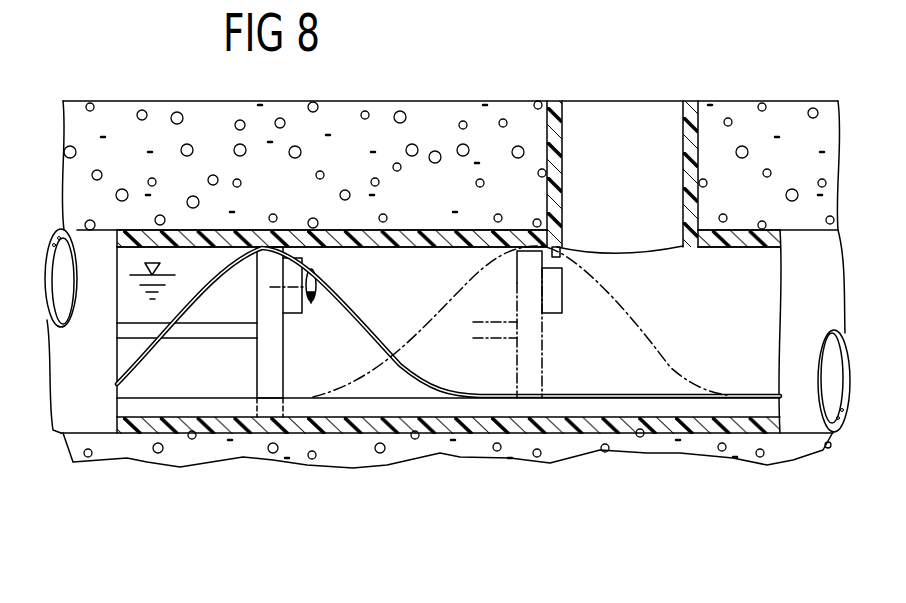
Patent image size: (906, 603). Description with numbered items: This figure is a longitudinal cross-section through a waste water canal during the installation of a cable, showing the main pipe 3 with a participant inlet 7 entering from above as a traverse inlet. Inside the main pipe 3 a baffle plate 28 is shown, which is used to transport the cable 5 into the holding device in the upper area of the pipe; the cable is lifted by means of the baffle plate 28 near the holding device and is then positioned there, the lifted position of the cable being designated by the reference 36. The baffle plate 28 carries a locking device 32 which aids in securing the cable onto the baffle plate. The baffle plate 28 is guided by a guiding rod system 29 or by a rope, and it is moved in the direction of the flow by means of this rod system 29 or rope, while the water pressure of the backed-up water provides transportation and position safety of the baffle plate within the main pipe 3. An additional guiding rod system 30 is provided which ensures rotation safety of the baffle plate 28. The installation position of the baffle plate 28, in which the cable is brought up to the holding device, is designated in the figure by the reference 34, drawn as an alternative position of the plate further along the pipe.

The main pipe 3 is at (427, 270).
The cable 5 is at (130, 370).
The participant inlet 7 is at (621, 126).
The baffle plate 28 is at (275, 364).
The guiding rod system 29 is at (223, 332).
The additional guiding rod system 30 is at (147, 407).
The locking device 32 is at (310, 308).
The installation position of the baffle plate 34 is at (541, 372).
The lifted position of the cable 36 is at (258, 233).